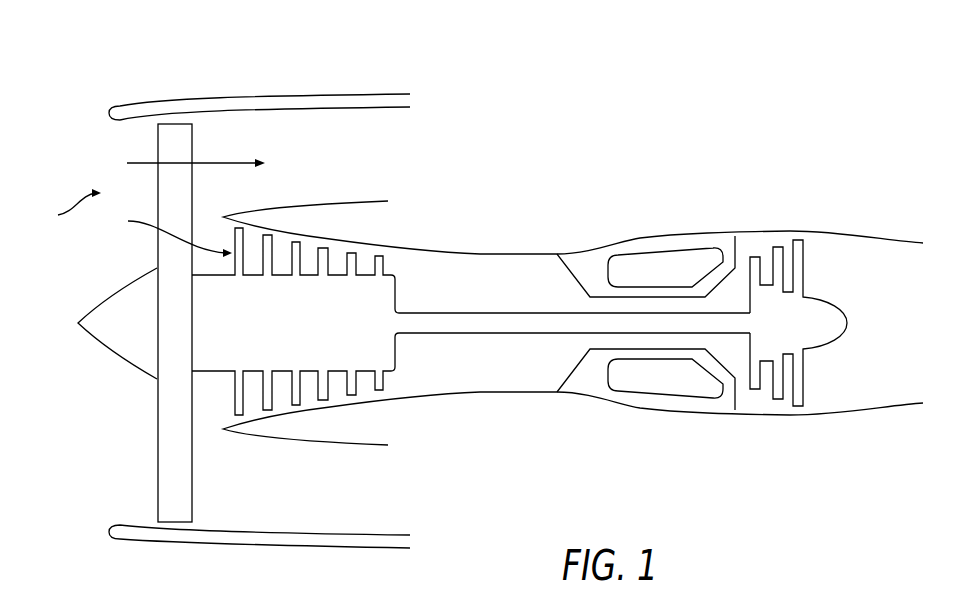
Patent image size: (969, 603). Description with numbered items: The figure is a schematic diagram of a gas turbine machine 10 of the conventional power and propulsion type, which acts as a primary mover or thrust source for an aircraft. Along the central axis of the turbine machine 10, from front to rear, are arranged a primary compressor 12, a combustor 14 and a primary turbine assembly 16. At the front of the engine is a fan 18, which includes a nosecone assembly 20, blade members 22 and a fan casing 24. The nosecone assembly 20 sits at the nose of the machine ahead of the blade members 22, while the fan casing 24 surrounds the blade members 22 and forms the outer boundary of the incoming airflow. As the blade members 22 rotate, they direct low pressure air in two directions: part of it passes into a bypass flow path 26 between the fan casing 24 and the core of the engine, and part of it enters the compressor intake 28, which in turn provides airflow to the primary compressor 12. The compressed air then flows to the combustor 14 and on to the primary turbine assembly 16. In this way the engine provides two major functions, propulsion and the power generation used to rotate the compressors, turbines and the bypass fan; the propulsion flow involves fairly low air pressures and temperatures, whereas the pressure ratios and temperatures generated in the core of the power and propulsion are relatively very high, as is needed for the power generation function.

The gas turbine machine 10 is at (662, 131).
The primary compressor 12 is at (330, 310).
The combustor 14 is at (653, 268).
The primary turbine assembly 16 is at (790, 322).
The fan 18 is at (64, 212).
The nosecone assembly 20 is at (117, 345).
The blade members 22 is at (177, 504).
The fan casing 24 is at (267, 105).
The bypass flow path 26 is at (227, 160).
The compressor intake 28 is at (167, 234).